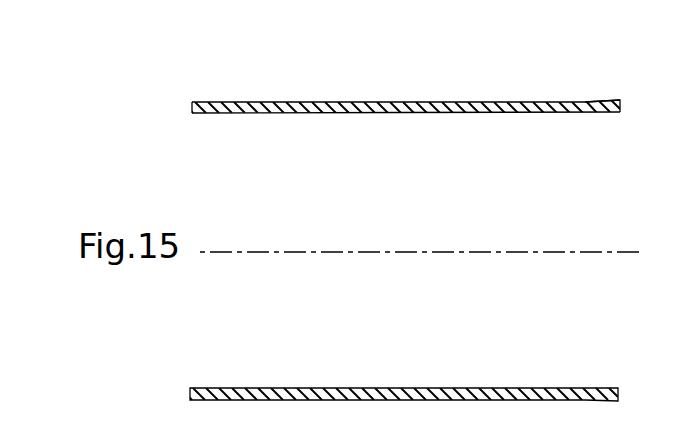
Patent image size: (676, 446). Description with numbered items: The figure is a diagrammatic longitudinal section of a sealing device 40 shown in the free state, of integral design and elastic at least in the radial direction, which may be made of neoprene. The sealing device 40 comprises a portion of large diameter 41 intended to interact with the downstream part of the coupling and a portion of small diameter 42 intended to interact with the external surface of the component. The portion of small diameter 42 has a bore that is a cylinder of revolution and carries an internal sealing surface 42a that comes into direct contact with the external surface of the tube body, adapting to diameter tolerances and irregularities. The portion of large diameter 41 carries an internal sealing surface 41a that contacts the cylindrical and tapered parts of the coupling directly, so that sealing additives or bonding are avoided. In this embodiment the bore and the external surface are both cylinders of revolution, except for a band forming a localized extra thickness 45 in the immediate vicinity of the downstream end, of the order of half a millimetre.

The sealing device 40 is at (209, 86).
The portion of large diameter 41 is at (298, 102).
The portion of small diameter 42 is at (525, 102).
The localized extra thickness 45 is at (612, 100).
The internal sealing surface 41a is at (207, 114).
The internal sealing surface 42a is at (557, 113).